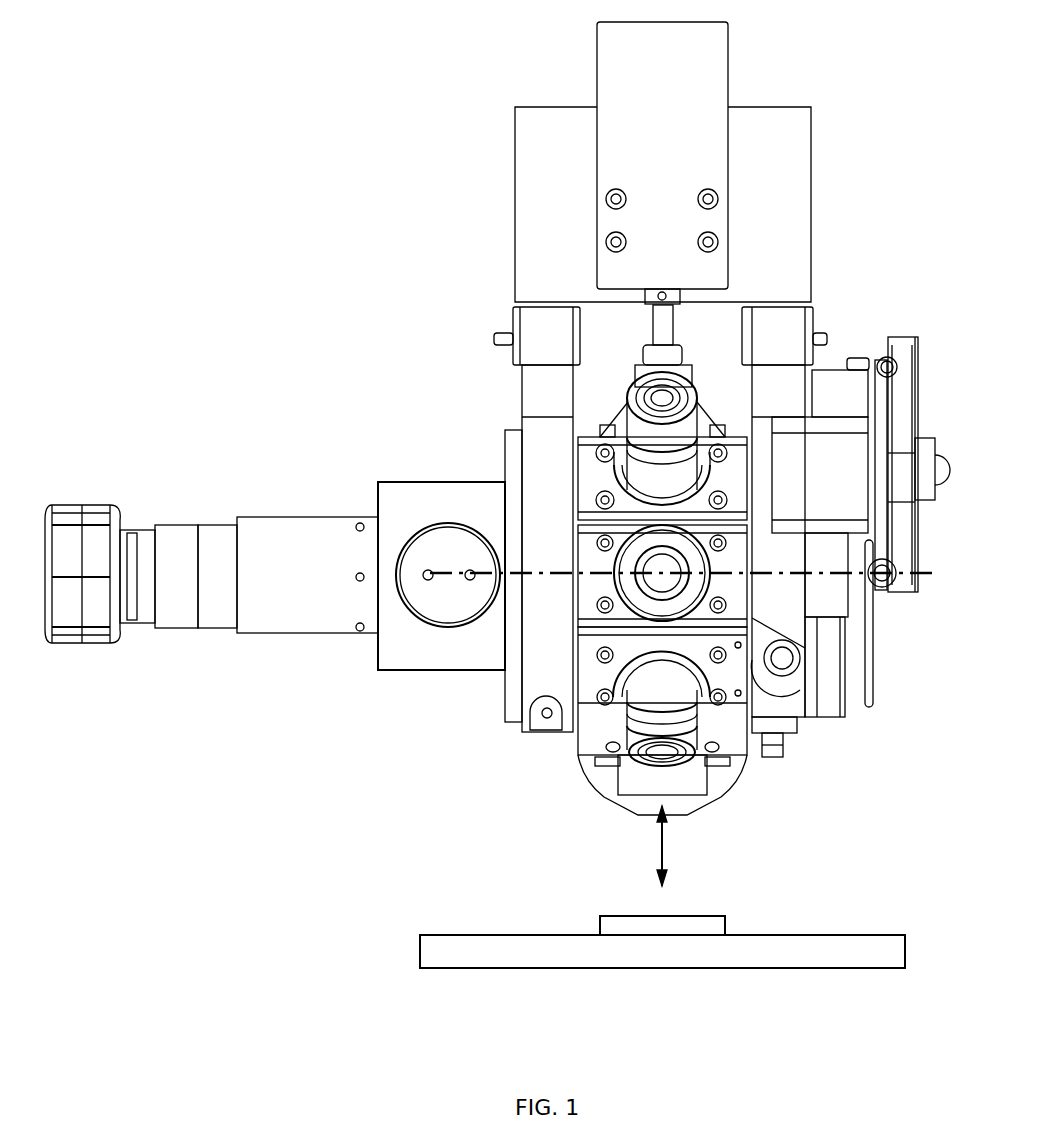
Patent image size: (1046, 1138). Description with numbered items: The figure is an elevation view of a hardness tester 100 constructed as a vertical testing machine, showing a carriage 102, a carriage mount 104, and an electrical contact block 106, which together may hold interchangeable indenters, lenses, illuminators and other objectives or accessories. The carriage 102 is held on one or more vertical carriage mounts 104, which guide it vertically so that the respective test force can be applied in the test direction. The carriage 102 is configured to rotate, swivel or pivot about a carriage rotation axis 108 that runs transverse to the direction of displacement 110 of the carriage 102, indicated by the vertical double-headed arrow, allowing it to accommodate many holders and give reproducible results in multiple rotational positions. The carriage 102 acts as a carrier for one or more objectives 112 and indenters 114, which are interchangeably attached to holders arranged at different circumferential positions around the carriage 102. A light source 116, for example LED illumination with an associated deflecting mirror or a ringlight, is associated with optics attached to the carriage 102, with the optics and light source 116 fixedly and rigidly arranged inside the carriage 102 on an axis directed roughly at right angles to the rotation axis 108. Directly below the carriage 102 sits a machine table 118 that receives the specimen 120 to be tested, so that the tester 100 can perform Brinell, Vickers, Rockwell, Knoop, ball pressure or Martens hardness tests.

The hardness tester 100 is at (195, 138).
The carriage 102 is at (720, 400).
The carriage mount 104 is at (533, 433).
The electrical contact block 106 is at (787, 766).
The carriage rotation axis 108 is at (905, 578).
The direction of displacement 110 is at (660, 852).
The objective 112 is at (600, 416).
The indenter 114 is at (578, 510).
The light source 116 is at (603, 775).
The machine table 118 is at (420, 936).
The specimen 120 is at (600, 917).